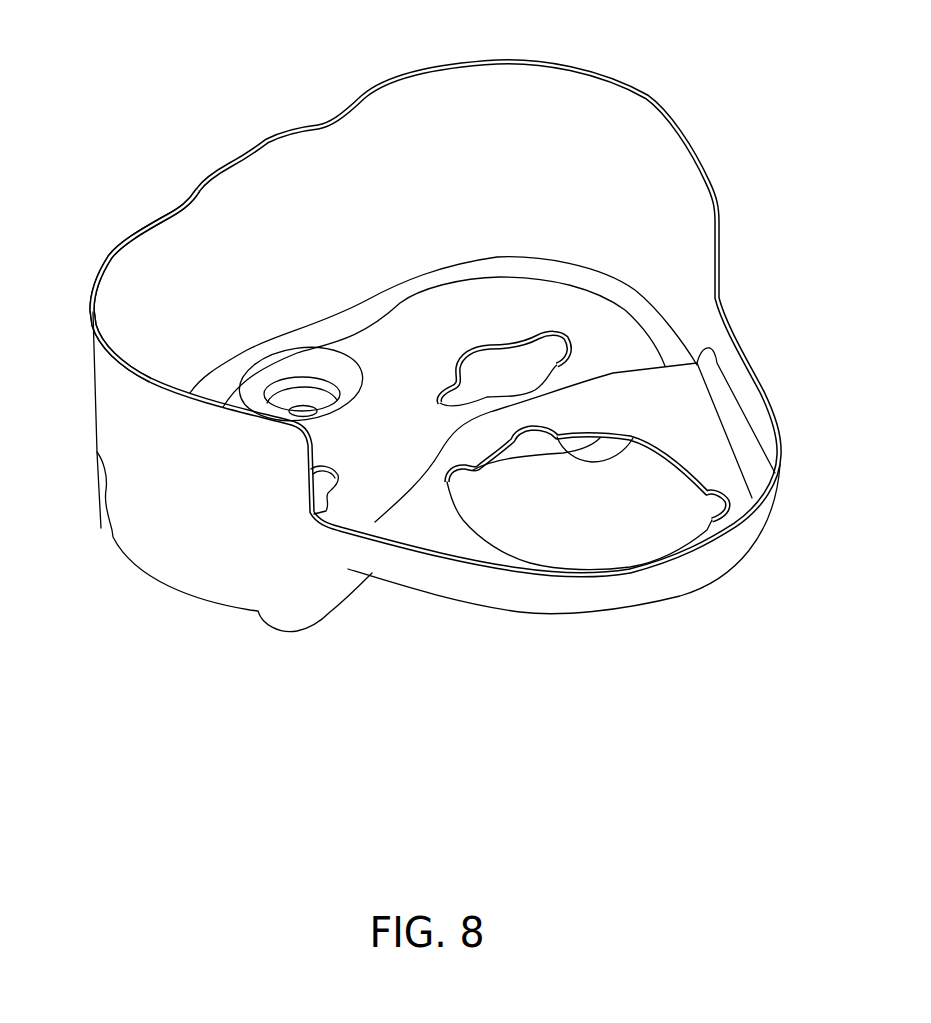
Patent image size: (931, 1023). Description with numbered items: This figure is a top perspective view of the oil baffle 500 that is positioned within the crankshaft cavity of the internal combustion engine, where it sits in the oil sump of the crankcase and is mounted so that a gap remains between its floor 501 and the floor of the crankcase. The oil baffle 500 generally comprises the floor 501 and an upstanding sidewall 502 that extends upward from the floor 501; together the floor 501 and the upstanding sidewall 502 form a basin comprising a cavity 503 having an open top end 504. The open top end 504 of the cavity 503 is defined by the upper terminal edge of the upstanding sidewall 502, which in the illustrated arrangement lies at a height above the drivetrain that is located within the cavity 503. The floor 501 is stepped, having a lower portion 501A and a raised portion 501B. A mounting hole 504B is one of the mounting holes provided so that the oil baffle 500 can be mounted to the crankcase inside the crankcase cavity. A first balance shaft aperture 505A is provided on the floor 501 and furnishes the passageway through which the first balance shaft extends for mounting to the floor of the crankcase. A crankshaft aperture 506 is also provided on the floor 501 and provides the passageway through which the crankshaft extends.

The oil baffle 500 is at (750, 109).
The floor 501 is at (455, 313).
The lower portion 501A is at (419, 440).
The raised portion 501B is at (672, 425).
The upstanding sidewall 502 is at (192, 530).
The cavity 503 is at (395, 250).
The open top end 504 is at (658, 120).
The mounting hole 504B is at (315, 420).
The first balance shaft aperture 505A is at (318, 486).
The crankshaft aperture 506 is at (577, 520).